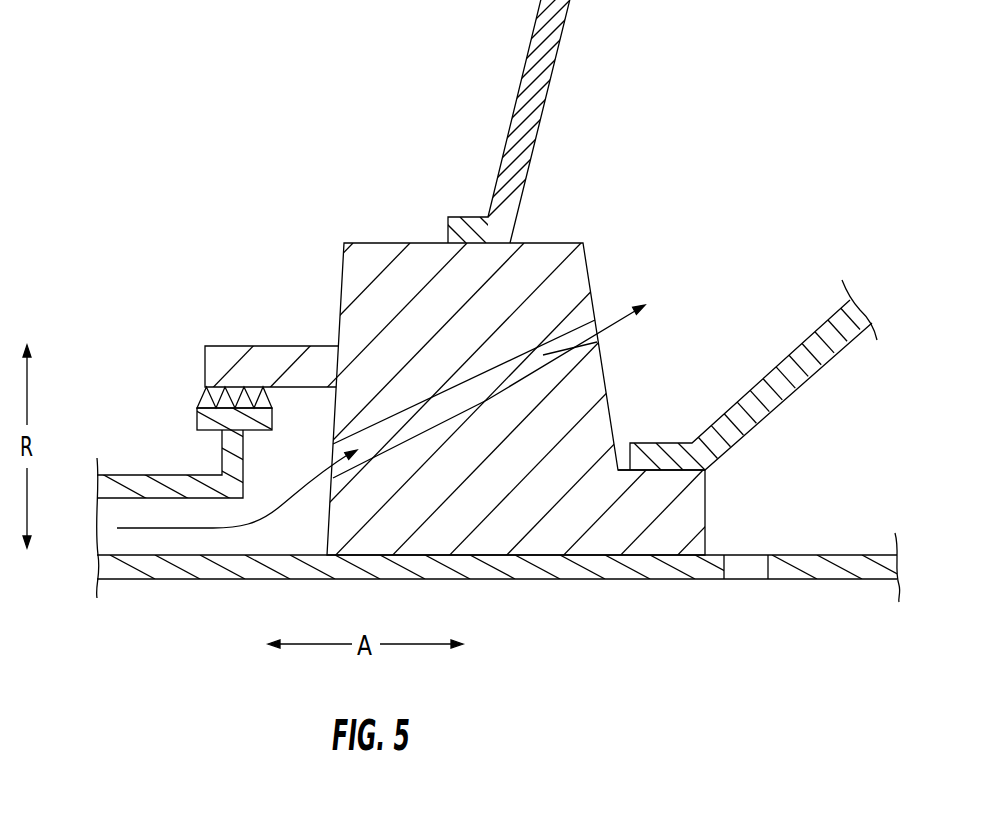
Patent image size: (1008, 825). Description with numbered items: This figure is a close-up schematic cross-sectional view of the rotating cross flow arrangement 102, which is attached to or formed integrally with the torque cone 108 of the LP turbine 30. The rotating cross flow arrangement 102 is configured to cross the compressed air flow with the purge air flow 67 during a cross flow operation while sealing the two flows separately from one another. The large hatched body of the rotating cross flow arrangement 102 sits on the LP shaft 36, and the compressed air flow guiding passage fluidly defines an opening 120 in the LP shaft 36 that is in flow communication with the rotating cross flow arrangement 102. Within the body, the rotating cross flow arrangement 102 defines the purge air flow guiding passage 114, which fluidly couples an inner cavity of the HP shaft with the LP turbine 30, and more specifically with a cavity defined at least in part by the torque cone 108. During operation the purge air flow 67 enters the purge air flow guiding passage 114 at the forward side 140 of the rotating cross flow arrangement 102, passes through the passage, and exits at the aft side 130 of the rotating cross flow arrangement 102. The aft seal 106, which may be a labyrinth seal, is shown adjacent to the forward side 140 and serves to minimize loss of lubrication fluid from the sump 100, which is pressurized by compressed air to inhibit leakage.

The LP turbine 30 is at (786, 210).
The LP shaft 36 is at (818, 581).
The purge air flow 67 is at (615, 318).
The sump 100 is at (100, 299).
The rotating cross flow arrangement 102 is at (423, 328).
The aft seal 106 is at (192, 392).
The torque cone 108 is at (547, 100).
The purge air flow guiding passage 114 is at (503, 398).
The opening 120 is at (737, 592).
The aft side 130 is at (632, 386).
The forward side 140 is at (312, 319).